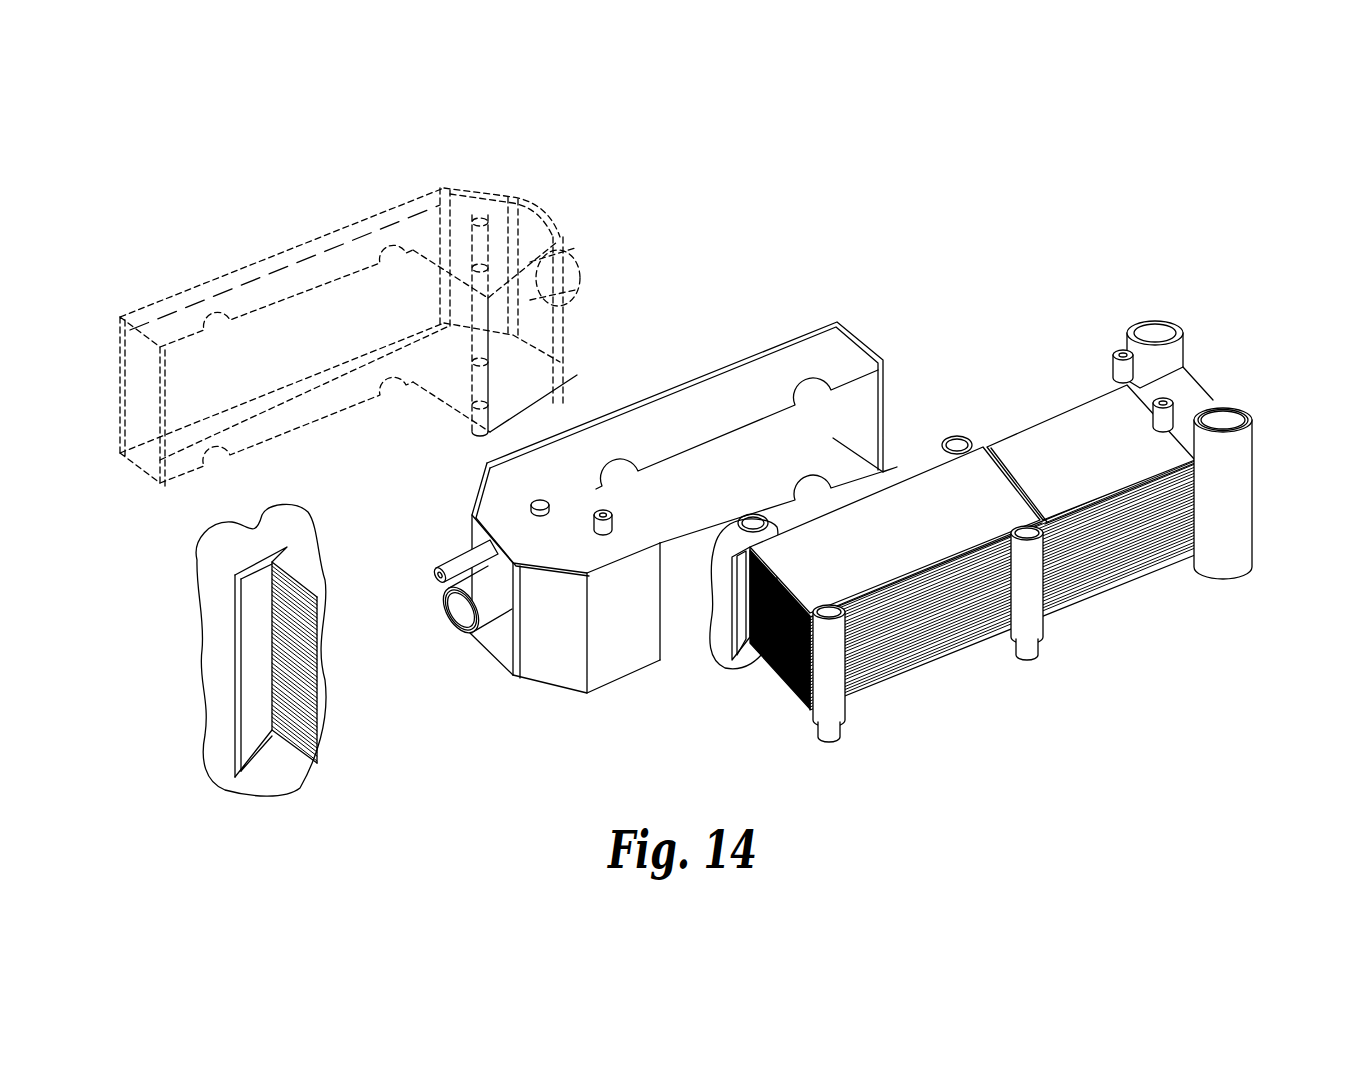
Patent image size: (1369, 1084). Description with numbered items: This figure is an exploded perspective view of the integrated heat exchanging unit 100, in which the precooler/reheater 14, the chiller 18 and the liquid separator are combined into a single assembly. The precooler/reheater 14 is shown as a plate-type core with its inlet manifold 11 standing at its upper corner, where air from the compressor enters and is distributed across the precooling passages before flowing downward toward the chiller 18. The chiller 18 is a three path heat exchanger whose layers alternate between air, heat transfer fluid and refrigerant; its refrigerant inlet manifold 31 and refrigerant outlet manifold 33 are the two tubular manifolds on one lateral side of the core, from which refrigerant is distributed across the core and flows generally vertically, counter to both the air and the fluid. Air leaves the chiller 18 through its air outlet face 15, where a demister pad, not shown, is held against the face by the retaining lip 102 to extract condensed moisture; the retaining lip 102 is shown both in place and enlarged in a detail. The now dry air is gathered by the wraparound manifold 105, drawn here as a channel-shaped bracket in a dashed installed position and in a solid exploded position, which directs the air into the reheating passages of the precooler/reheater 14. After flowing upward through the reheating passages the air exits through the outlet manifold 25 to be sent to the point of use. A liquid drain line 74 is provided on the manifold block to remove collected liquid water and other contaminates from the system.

The integrated heat exchanging unit 100 is at (1108, 251).
The wraparound manifold 105 is at (267, 290).
The liquid drain line 74 is at (458, 610).
The retaining lip 102 is at (253, 627).
The air outlet face 15 is at (770, 703).
The chiller 18 is at (944, 612).
The precooler/reheater 14 is at (1038, 440).
The outlet manifold 25 is at (1178, 358).
The refrigerant inlet manifold 31 is at (833, 667).
The refrigerant outlet manifold 33 is at (1034, 583).
The inlet manifold 11 is at (1242, 523).